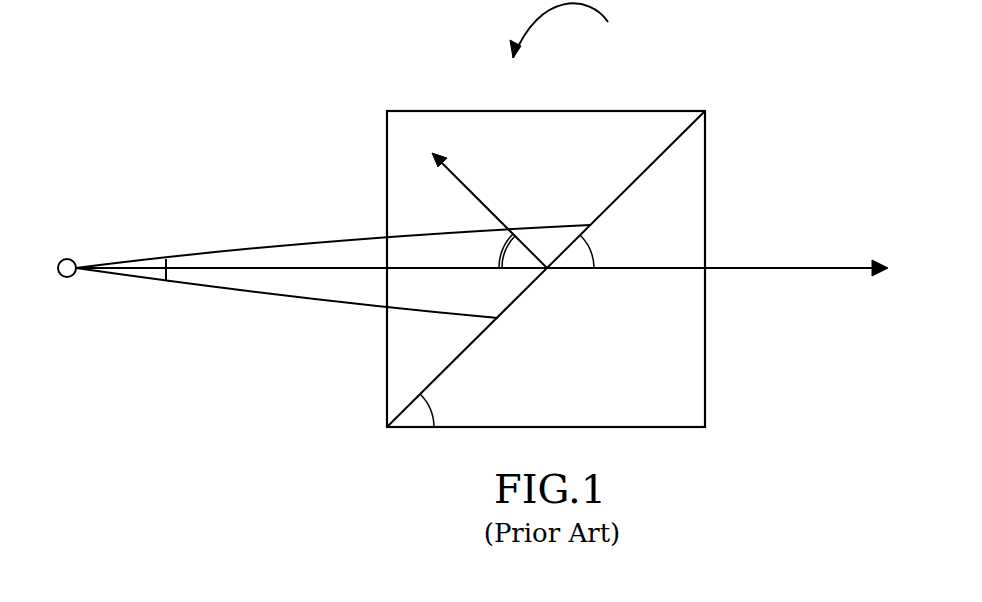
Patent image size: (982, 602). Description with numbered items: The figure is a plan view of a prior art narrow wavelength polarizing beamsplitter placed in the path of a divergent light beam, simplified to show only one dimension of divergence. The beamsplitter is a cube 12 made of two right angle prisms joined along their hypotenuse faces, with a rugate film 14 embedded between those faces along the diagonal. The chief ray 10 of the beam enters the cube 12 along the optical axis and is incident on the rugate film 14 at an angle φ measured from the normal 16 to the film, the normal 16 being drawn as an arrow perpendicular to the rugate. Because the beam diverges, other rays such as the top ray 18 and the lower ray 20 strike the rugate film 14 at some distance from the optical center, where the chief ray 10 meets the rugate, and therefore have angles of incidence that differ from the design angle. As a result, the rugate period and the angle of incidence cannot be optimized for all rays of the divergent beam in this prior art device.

The chief ray 10 is at (355, 267).
The cube 12 is at (577, 30).
The rugate film 14 is at (665, 152).
The normal 16 is at (475, 193).
The top ray 18 is at (552, 225).
The lower ray 20 is at (307, 302).